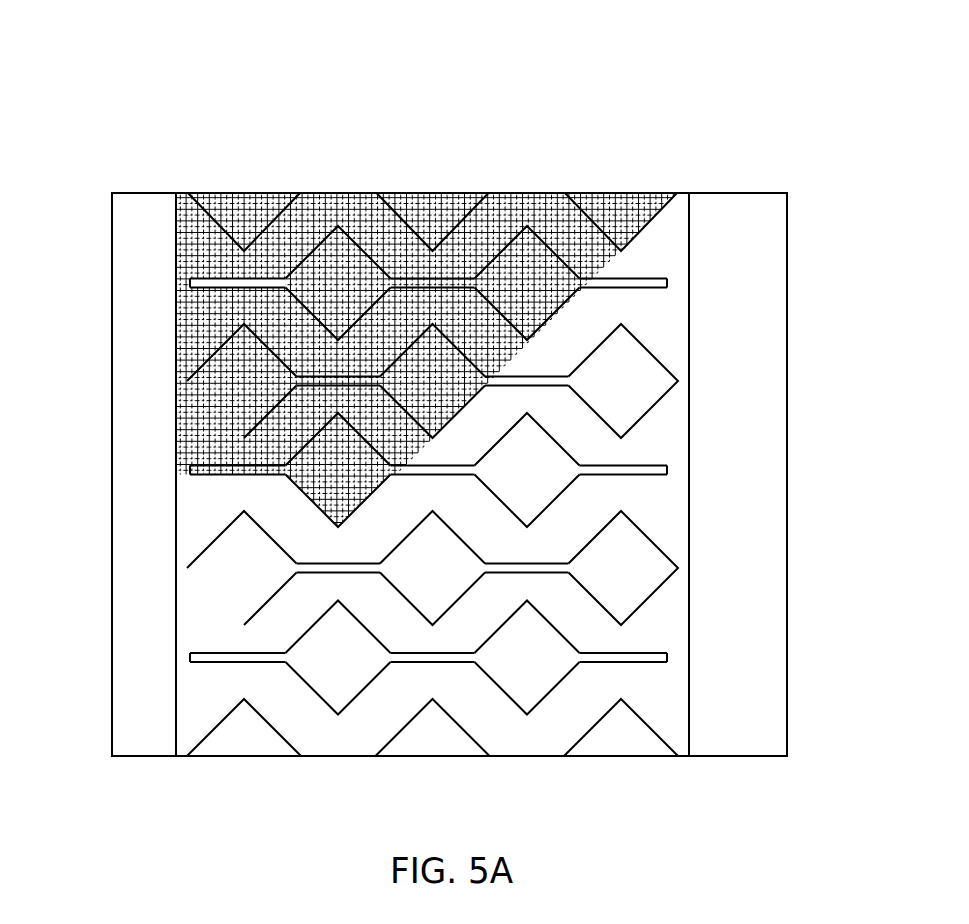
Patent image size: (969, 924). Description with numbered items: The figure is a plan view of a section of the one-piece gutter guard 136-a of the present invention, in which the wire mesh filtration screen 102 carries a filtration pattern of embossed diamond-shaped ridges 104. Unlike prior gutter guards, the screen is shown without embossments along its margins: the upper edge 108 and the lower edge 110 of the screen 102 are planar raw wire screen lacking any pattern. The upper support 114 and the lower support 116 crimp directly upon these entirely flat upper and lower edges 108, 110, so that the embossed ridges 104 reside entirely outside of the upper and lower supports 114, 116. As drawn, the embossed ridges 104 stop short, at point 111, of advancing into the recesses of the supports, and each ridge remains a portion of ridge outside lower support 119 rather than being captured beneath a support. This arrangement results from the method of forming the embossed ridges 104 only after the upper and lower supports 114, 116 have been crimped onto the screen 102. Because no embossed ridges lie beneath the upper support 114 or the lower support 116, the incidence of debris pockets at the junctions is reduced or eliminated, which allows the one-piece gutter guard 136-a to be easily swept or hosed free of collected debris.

The one-piece gutter guard 136-a is at (310, 50).
The wire mesh filtration screen 102 is at (195, 320).
The embossed ridges 104 is at (545, 255).
The upper edge 108 is at (145, 175).
The lower edge 110 is at (743, 173).
The point 111 is at (188, 563).
The upper support 114 is at (160, 654).
The lower support 116 is at (757, 514).
The portion of ridge outside lower support 119 is at (197, 455).